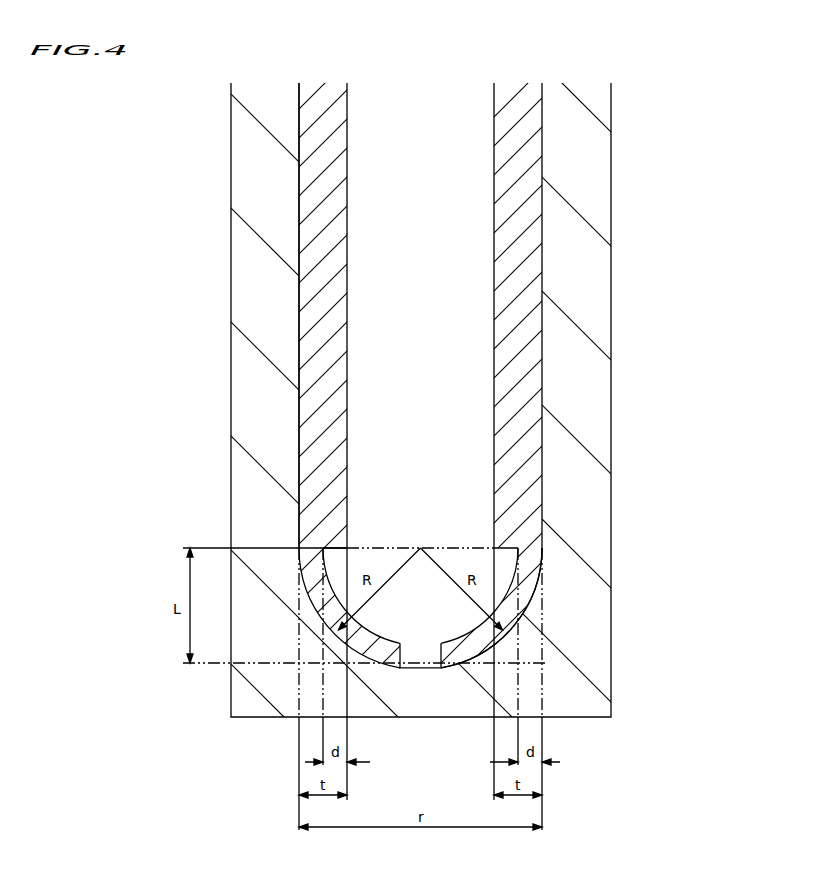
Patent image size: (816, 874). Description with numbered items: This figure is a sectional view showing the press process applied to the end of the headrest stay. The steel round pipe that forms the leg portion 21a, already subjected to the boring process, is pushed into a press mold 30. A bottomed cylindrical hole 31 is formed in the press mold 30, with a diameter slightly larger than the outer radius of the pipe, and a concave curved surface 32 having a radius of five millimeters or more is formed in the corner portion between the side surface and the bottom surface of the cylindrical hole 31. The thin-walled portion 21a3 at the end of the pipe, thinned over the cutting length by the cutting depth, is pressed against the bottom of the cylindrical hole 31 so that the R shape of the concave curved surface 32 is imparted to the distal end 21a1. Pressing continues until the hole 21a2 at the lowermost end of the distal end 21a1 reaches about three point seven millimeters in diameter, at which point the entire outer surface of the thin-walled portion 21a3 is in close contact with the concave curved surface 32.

The press mold 30 is at (593, 405).
The cylindrical hole 31 is at (299, 318).
The concave curved surface 32 is at (330, 576).
The leg portion 21a is at (529, 287).
The distal end 21a1 is at (528, 597).
The hole 21a2 is at (401, 648).
The thin-walled portion 21a3 is at (546, 588).